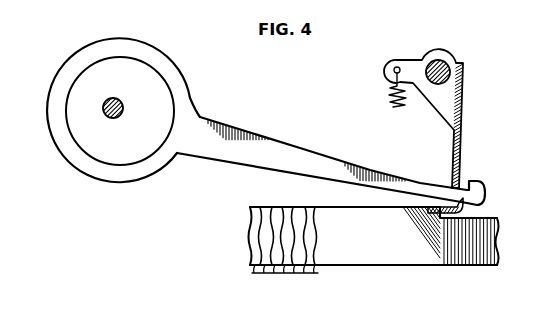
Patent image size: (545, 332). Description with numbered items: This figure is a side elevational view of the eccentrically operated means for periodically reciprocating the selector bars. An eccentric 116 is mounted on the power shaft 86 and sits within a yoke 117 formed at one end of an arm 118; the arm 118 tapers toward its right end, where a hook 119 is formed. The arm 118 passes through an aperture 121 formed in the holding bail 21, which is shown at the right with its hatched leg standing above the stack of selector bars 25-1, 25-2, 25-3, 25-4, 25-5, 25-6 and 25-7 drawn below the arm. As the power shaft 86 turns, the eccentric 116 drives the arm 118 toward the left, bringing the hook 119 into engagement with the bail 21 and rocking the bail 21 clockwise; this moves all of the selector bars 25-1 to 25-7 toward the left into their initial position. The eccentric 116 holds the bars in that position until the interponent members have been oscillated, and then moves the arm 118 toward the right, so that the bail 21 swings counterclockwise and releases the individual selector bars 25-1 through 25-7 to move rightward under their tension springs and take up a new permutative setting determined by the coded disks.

The holding bail 21 is at (466, 80).
The power shaft 86 is at (103, 112).
The eccentric 116 is at (162, 90).
The yoke 117 is at (143, 52).
The arm 118 is at (282, 146).
The hook 119 is at (482, 192).
The aperture 121 is at (452, 187).
The selector bar 25-1 is at (318, 273).
The selector bar 25-2 is at (272, 236).
The selector bar 25-3 is at (282, 236).
The selector bar 25-4 is at (293, 236).
The selector bar 25-5 is at (305, 236).
The selector bar 25-6 is at (315, 236).
The selector bar 25-7 is at (315, 236).